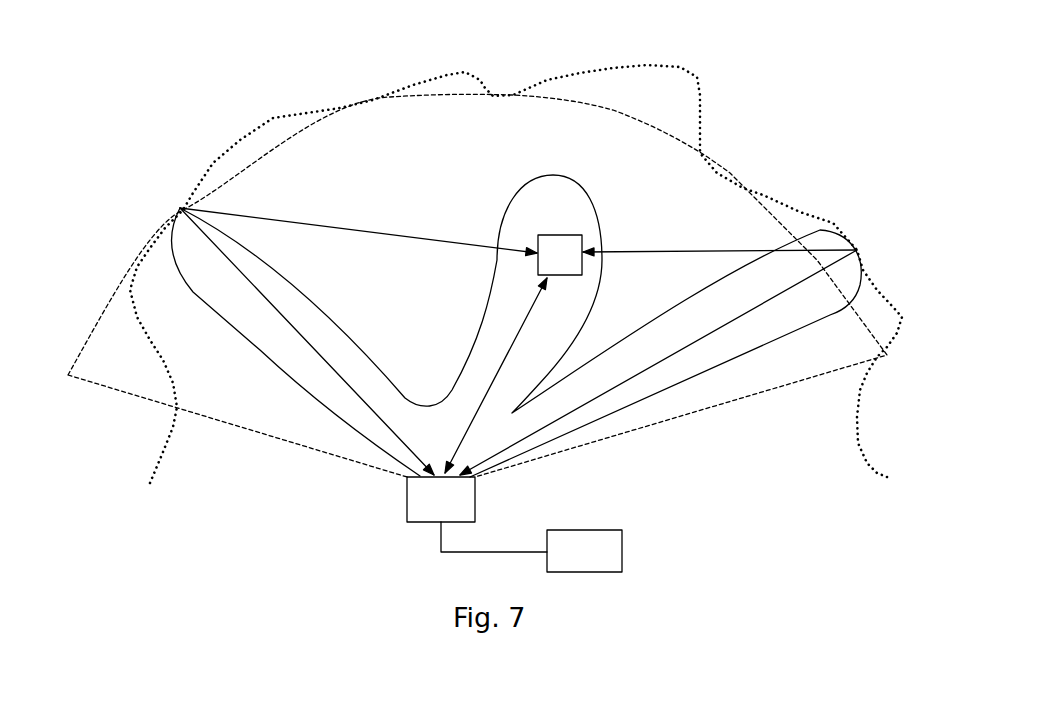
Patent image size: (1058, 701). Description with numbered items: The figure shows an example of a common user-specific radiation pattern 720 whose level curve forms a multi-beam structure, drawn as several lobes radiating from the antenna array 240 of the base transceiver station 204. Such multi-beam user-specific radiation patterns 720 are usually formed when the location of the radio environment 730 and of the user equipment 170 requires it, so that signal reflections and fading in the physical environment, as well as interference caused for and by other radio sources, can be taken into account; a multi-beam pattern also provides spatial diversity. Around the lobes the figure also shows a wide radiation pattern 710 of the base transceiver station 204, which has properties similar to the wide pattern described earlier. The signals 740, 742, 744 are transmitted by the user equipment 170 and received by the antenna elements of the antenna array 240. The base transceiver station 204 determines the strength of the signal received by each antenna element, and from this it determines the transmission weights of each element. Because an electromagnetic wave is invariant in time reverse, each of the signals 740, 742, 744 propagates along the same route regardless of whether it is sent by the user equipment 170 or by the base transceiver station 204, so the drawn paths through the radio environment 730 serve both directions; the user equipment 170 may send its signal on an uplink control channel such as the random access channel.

The radio environment 730 is at (465, 73).
The wide radiation pattern 710 is at (614, 110).
The user-specific radiation pattern 720 is at (573, 177).
The user equipment 170 is at (555, 233).
The signal 740 is at (533, 307).
The signal 742 is at (747, 310).
The signal 744 is at (273, 307).
The antenna array 240 is at (407, 501).
The base transceiver station 204 is at (623, 553).